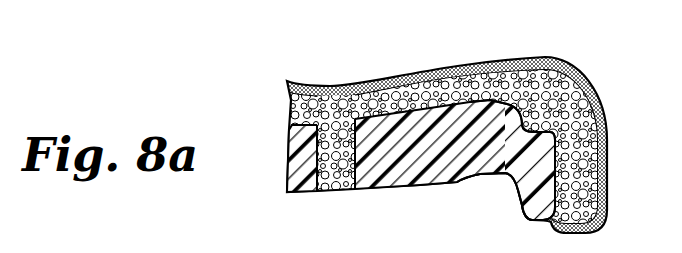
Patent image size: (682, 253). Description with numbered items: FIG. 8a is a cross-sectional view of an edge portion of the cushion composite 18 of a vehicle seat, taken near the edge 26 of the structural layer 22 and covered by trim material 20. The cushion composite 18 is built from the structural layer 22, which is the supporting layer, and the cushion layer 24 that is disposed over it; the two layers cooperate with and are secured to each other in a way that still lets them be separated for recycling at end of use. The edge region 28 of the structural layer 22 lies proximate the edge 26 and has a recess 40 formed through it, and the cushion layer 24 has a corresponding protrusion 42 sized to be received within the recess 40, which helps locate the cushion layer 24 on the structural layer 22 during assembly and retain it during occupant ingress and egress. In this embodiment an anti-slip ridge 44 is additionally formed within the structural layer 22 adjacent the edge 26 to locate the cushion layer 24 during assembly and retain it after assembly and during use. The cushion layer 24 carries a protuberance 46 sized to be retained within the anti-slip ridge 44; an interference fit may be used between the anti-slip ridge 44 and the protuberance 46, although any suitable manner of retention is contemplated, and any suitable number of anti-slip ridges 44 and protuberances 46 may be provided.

The cushion composite 18 is at (265, 168).
The trim material 20 is at (550, 58).
The structural layer 22 is at (403, 165).
The cushion layer 24 is at (290, 108).
The edge 26 is at (557, 173).
The edge region 28 is at (489, 118).
The recess 40 is at (358, 197).
The protrusion 42 is at (340, 140).
The anti-slip ridge 44 is at (471, 178).
The protuberance 46 is at (537, 130).